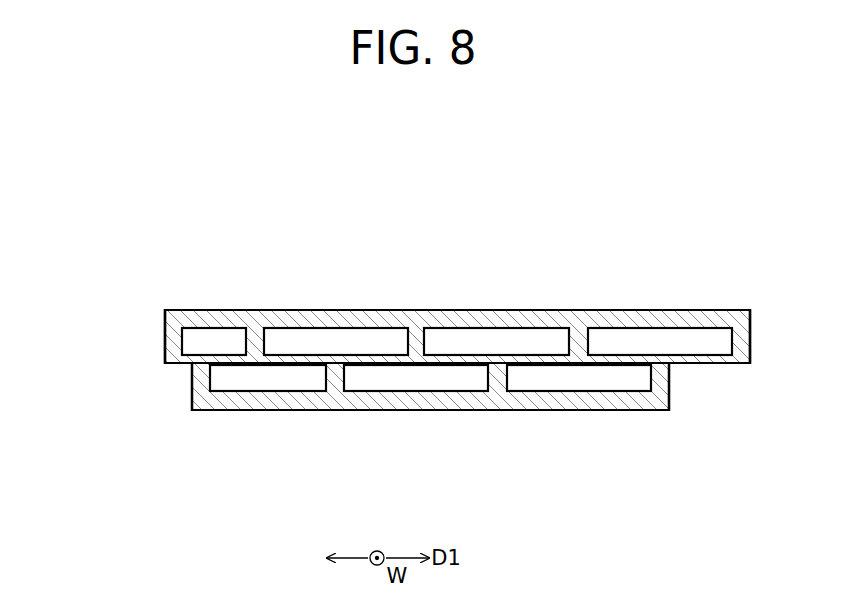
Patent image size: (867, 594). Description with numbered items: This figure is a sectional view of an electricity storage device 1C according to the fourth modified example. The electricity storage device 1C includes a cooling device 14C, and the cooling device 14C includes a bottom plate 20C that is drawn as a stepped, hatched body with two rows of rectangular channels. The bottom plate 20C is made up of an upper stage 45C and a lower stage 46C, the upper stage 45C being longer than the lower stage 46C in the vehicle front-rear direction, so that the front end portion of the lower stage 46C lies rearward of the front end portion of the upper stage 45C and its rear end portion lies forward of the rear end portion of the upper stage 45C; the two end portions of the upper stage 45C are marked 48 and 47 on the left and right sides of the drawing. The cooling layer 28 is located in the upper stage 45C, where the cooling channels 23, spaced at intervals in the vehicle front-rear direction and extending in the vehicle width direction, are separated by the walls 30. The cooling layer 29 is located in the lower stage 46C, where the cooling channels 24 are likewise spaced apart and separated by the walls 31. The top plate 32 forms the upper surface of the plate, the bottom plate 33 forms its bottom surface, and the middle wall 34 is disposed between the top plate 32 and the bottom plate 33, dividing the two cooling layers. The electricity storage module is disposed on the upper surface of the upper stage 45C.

The electricity storage device 1C is at (457, 280).
The cooling device 14C is at (582, 212).
The bottom plate 20C is at (397, 218).
The cooling channels 23 is at (206, 338).
The cooling channels 24 is at (226, 380).
The cooling layer 28 is at (167, 334).
The cooling layer 29 is at (193, 390).
The walls 30 is at (256, 333).
The walls 31 is at (331, 380).
The top plate 32 is at (524, 313).
The bottom plate 33 is at (622, 403).
The middle wall 34 is at (280, 360).
The upper stage 45C is at (391, 336).
The lower stage 46C is at (351, 386).
The right end portion 47 is at (748, 301).
The left end portion 48 is at (153, 301).